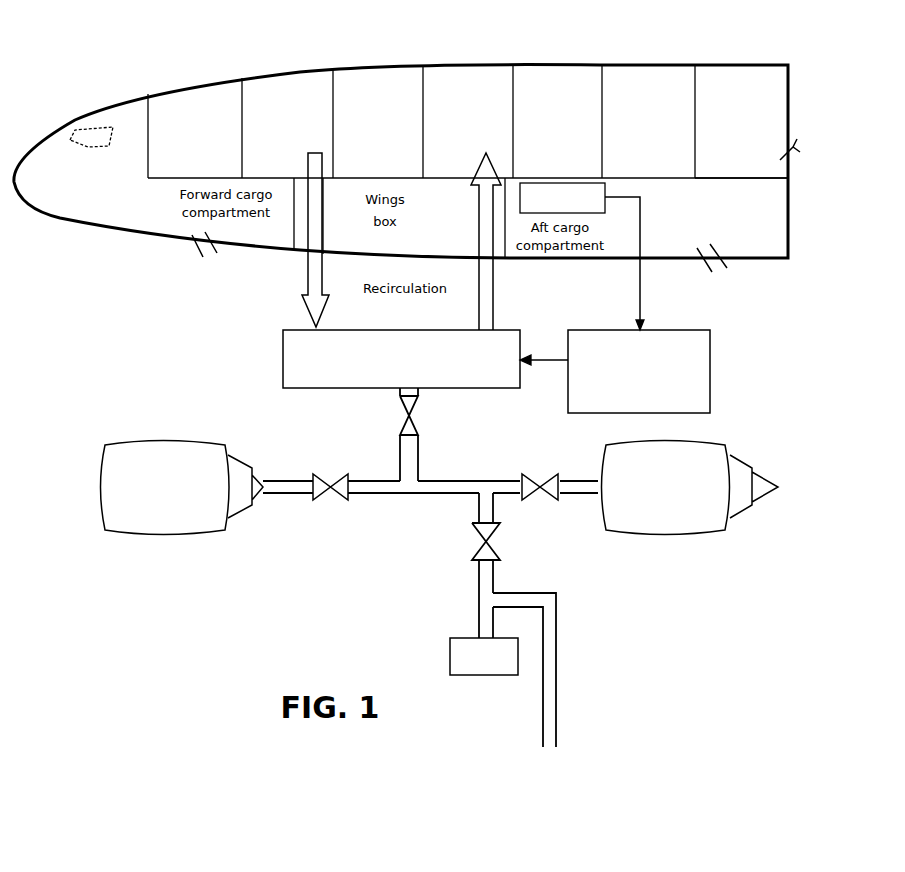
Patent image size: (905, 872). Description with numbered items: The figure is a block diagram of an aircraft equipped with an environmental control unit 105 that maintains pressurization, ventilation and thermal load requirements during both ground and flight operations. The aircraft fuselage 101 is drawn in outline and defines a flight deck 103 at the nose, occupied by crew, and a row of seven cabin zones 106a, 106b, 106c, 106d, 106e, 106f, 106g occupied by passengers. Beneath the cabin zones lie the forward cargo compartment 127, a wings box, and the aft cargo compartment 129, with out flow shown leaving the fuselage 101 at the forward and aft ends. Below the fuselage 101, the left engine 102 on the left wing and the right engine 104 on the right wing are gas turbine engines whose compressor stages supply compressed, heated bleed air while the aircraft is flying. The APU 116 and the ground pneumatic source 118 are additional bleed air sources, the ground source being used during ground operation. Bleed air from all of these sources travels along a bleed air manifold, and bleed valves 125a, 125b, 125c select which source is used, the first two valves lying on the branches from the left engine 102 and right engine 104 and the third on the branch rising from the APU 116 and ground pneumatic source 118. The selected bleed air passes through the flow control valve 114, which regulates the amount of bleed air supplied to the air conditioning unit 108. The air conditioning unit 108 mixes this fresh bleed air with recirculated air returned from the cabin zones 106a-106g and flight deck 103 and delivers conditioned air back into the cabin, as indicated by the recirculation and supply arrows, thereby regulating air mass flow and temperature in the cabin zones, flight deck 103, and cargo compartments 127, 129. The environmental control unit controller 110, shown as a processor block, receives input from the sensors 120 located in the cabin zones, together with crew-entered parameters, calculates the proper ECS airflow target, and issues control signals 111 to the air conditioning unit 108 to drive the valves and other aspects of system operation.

The aircraft fuselage 101 is at (62, 222).
The left engine 102 is at (140, 444).
The flight deck 103 is at (94, 124).
The right engine 104 is at (742, 498).
The environmental control unit 105 is at (178, 353).
The cabin zone 106a is at (229, 94).
The cabin zone 106b is at (305, 94).
The cabin zone 106c is at (390, 90).
The cabin zone 106d is at (492, 90).
The cabin zone 106e is at (581, 88).
The cabin zone 106f is at (651, 85).
The cabin zone 106g is at (758, 75).
The air conditioning unit 108 is at (283, 357).
The environmental control unit controller 110 is at (710, 352).
The control signals 111 is at (556, 365).
The flow control valve 114 is at (420, 432).
The APU 116 is at (470, 676).
The ground pneumatic source 118 is at (587, 775).
The sensors 120 is at (605, 186).
The bleed valve 125a is at (326, 478).
The bleed valve 125b is at (553, 476).
The bleed valve 125c is at (480, 544).
The forward cargo compartment 127 is at (172, 227).
The aft cargo compartment 129 is at (632, 253).